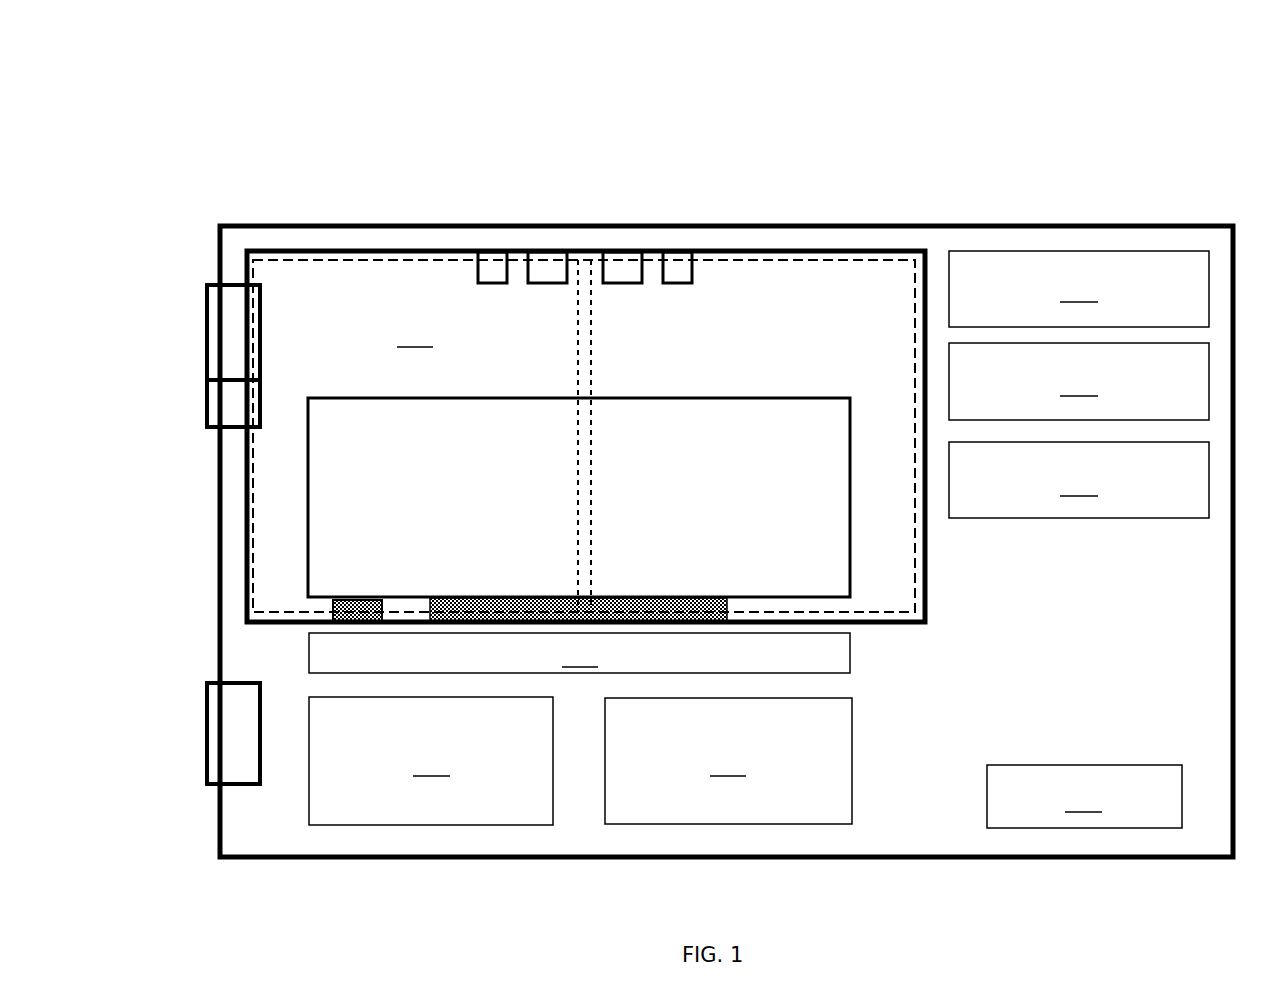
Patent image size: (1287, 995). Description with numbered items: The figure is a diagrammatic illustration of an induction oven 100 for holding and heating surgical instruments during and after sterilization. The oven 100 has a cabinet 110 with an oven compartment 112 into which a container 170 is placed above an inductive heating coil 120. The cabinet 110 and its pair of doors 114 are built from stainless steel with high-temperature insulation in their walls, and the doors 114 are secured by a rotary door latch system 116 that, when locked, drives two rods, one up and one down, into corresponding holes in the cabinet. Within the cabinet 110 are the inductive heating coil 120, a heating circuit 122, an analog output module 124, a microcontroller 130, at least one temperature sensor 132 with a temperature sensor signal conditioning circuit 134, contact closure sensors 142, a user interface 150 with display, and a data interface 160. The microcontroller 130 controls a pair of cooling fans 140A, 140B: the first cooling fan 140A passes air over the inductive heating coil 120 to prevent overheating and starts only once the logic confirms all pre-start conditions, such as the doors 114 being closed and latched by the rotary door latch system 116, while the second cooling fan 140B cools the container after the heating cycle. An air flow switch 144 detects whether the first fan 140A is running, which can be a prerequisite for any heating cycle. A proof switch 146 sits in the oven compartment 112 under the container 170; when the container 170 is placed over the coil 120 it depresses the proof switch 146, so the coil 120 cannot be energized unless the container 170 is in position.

The oven 100 is at (208, 131).
The cabinet 110 is at (948, 223).
The oven compartment 112 is at (586, 436).
The doors 114 is at (443, 268).
The rotary door latch system 116 is at (624, 262).
The inductive heating coil 120 is at (579, 653).
The heating circuit 122 is at (431, 761).
The analog output module 124 is at (728, 761).
The microcontroller 130 is at (1079, 381).
The temperature sensor 132 is at (642, 602).
The temperature sensor signal conditioning circuit 134 is at (1079, 480).
The first cooling fan 140A is at (220, 739).
The second cooling fan 140B is at (220, 311).
The contact closure sensors 142 is at (492, 265).
The air flow switch 144 is at (222, 406).
The proof switch 146 is at (335, 610).
The user interface 150 is at (1079, 289).
The data interface 160 is at (1084, 796).
The container 170 is at (630, 397).